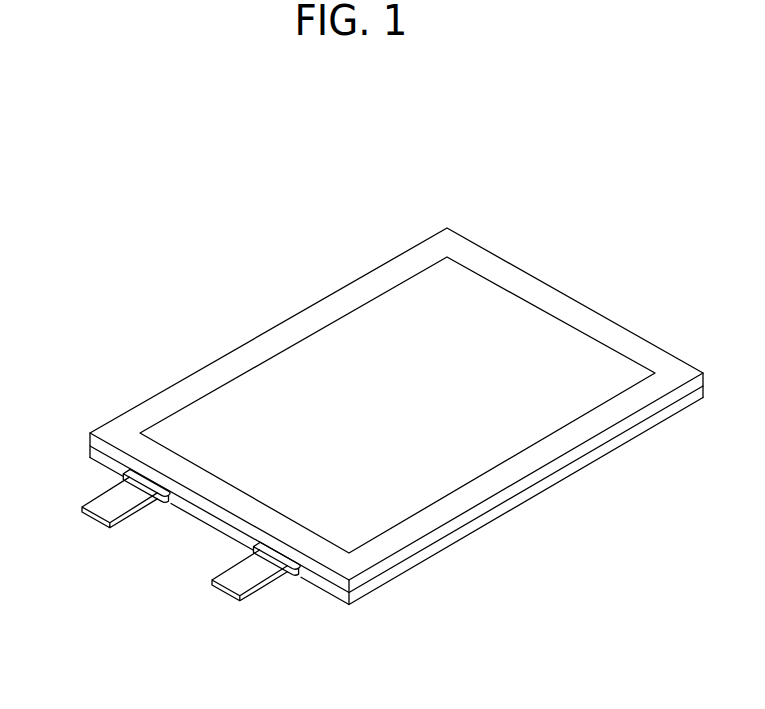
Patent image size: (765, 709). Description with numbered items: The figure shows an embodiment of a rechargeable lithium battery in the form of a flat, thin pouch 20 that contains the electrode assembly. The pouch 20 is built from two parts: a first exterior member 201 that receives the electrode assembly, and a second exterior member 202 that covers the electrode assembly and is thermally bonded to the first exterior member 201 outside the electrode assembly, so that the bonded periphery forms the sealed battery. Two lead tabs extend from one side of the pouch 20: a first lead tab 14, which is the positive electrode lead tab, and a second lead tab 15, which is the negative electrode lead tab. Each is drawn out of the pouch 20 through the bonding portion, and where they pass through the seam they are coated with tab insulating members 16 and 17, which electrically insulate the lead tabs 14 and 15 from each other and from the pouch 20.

The first lead tab 14 is at (100, 500).
The second lead tab 15 is at (230, 586).
The tab insulating member 16 is at (150, 484).
The tab insulating member 17 is at (282, 558).
The pouch 20 is at (396, 419).
The first exterior member 201 is at (487, 517).
The second exterior member 202 is at (512, 493).